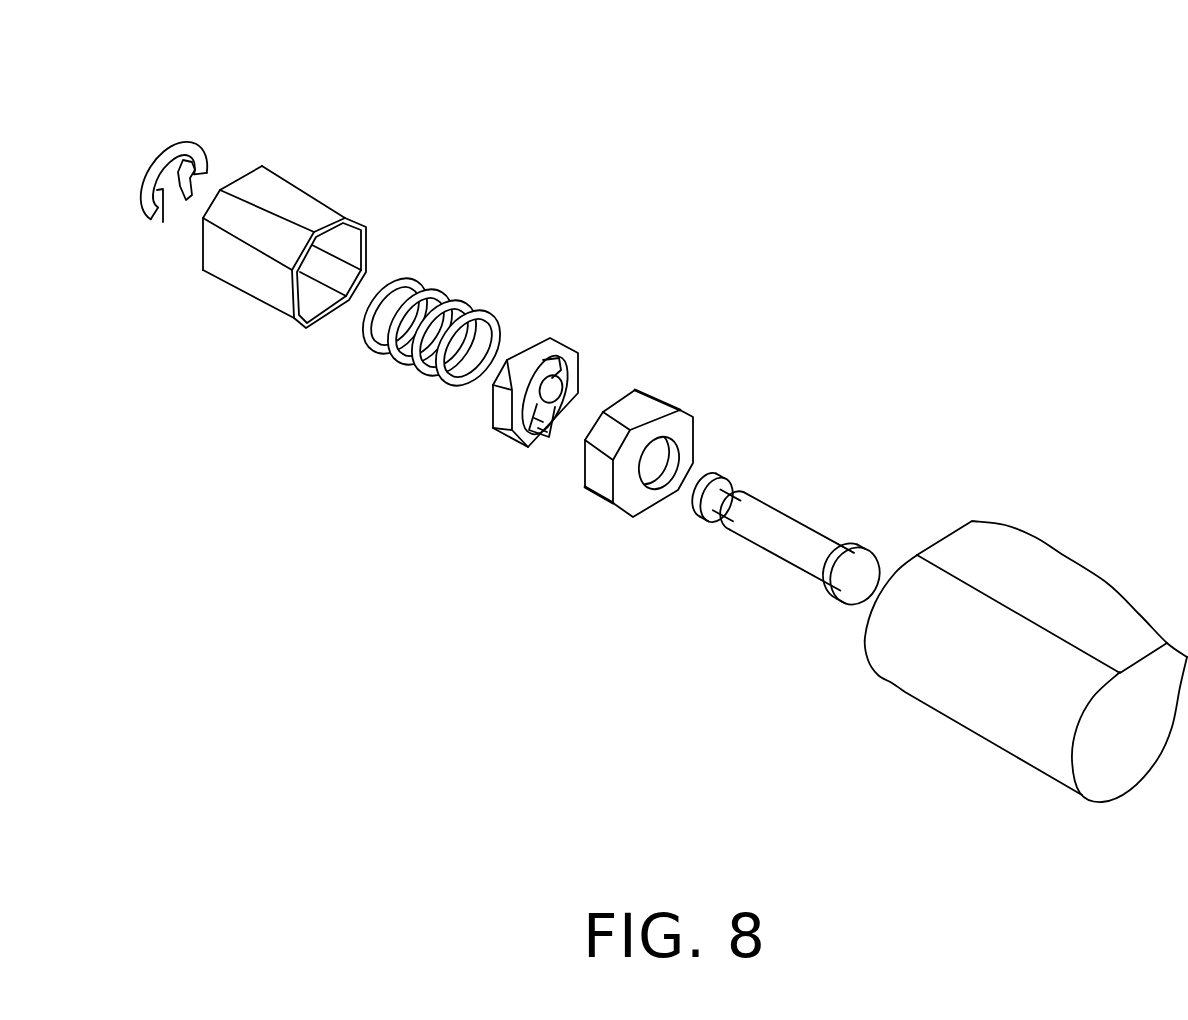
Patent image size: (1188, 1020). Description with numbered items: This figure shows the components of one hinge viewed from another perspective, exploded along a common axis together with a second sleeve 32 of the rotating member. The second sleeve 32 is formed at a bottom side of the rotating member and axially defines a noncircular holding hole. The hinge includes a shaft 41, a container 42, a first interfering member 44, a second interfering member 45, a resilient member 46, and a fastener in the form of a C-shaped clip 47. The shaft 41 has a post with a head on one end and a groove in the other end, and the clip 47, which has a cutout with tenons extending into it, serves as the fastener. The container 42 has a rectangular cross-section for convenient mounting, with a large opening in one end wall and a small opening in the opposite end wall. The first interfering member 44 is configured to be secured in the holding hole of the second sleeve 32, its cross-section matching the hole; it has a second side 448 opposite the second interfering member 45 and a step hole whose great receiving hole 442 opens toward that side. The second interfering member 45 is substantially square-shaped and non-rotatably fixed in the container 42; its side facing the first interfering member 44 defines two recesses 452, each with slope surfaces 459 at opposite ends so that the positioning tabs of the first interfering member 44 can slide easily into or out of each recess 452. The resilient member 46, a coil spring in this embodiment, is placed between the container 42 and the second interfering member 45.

The second sleeve 32 is at (943, 663).
The shaft 41 is at (775, 528).
The container 42 is at (287, 197).
The first interfering member 44 is at (659, 440).
The receiving hole 442 is at (653, 477).
The second side 448 is at (680, 423).
The second interfering member 45 is at (522, 381).
The recess 452 is at (545, 447).
The slope surface 459 is at (562, 415).
The resilient member 46 is at (425, 287).
The C-shaped clip 47 is at (183, 147).